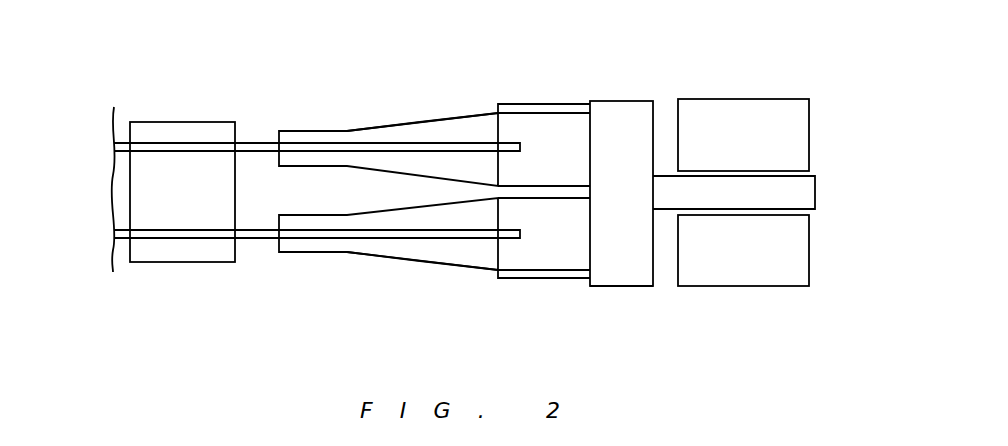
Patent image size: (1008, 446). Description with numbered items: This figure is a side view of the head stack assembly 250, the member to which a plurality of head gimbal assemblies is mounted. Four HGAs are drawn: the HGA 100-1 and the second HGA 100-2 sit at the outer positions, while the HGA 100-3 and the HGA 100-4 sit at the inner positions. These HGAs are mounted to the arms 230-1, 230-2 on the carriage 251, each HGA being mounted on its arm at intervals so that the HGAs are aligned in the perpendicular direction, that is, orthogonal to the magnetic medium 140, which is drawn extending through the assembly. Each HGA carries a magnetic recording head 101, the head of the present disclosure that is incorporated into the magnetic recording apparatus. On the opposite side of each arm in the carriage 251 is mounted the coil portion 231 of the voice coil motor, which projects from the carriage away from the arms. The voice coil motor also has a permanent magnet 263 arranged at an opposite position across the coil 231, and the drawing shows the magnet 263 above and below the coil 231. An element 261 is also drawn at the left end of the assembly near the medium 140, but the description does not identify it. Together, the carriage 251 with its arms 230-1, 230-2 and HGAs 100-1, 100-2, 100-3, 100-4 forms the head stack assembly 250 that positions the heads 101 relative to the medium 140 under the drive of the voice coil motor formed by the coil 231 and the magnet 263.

The HGA 100-1 is at (347, 141).
The second HGA 100-2 is at (347, 251).
The HGA 100-3 is at (435, 167).
The HGA 100-4 is at (432, 240).
The magnetic recording head 101 is at (276, 131).
The magnetic medium 140 is at (247, 143).
The arm 230-1 is at (511, 105).
The arm 230-2 is at (503, 278).
The coil portion 231 is at (803, 192).
The head stack assembly 250 is at (629, 76).
The carriage 251 is at (622, 272).
The fiber block 261 is at (173, 131).
The permanent magnet 263 is at (745, 112).